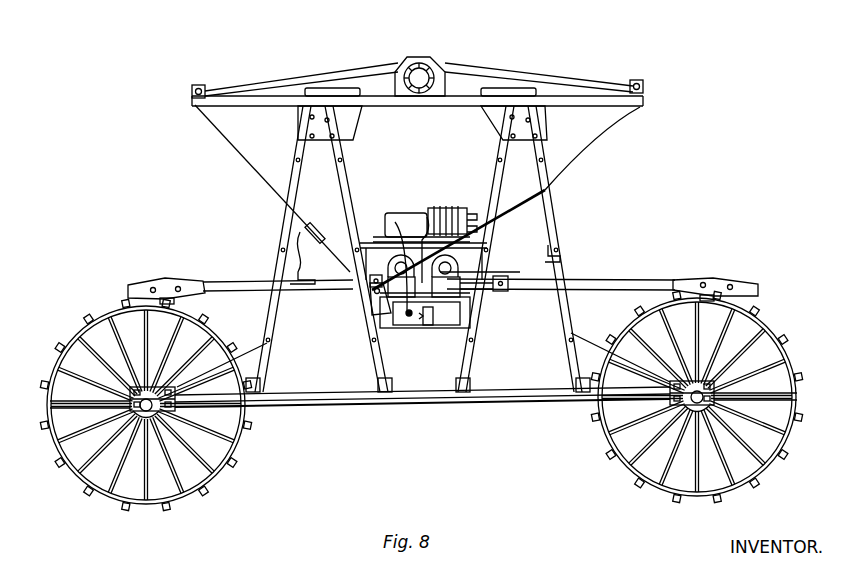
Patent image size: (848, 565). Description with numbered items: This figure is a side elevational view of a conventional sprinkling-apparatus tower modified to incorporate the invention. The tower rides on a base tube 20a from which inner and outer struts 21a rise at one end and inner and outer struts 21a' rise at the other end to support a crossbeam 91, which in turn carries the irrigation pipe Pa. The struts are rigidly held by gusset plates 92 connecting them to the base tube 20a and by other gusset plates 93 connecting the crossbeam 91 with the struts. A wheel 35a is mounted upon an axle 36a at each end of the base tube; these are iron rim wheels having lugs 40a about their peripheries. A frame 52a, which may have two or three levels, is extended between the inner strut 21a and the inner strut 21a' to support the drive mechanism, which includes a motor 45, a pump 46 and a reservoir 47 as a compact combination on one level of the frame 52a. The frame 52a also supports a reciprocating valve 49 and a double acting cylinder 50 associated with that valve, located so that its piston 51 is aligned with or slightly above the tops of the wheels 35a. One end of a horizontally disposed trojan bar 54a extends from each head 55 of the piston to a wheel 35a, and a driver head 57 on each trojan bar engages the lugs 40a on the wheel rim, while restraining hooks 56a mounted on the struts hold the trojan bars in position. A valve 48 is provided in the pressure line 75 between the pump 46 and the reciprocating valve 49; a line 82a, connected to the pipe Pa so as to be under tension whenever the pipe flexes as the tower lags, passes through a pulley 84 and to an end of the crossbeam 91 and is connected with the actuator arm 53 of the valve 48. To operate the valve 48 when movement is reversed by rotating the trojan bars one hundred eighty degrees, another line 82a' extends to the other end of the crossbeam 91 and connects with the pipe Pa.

The irrigation pipe Pa is at (431, 57).
The crossbeam 91 is at (640, 97).
The gusset plates 93 is at (343, 110).
The line 82a is at (268, 188).
The line 82a' is at (595, 148).
The motor 45 is at (416, 213).
The pump 46 is at (432, 210).
The reservoir 47 is at (452, 207).
The pressure line 75 is at (395, 222).
The frame 52a is at (478, 242).
The reciprocating valve 49 is at (437, 268).
The piston 51 is at (473, 273).
The double acting cylinder 50 is at (452, 284).
The head 55 is at (497, 292).
The pulley 84 is at (372, 306).
The valve 48 is at (386, 329).
The actuator arm 53 is at (428, 326).
The inner and outer struts 21a is at (321, 249).
The inner and outer struts 21a' is at (520, 249).
The restraining hooks 56a is at (298, 235).
The trojan bars 54a is at (261, 287).
The driver head 57 is at (158, 278).
The gusset plates 92 is at (255, 385).
The base tube 20a is at (330, 400).
The lugs 40a is at (237, 465).
The axle 36a is at (204, 472).
The wheel 35a is at (80, 473).